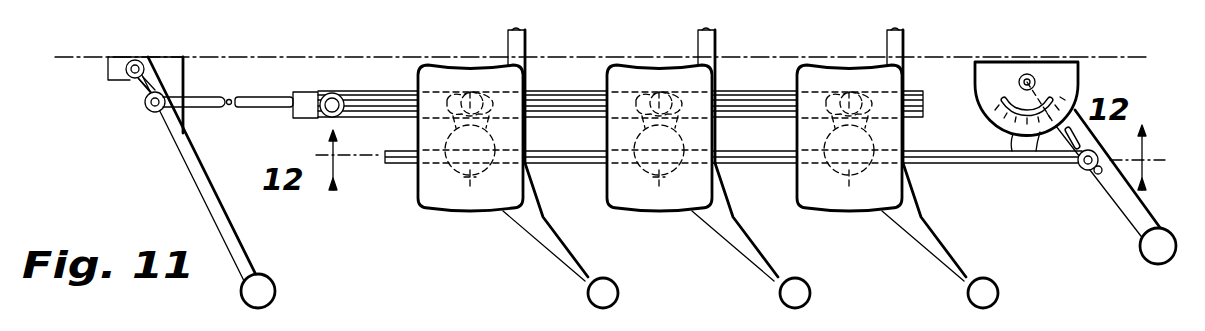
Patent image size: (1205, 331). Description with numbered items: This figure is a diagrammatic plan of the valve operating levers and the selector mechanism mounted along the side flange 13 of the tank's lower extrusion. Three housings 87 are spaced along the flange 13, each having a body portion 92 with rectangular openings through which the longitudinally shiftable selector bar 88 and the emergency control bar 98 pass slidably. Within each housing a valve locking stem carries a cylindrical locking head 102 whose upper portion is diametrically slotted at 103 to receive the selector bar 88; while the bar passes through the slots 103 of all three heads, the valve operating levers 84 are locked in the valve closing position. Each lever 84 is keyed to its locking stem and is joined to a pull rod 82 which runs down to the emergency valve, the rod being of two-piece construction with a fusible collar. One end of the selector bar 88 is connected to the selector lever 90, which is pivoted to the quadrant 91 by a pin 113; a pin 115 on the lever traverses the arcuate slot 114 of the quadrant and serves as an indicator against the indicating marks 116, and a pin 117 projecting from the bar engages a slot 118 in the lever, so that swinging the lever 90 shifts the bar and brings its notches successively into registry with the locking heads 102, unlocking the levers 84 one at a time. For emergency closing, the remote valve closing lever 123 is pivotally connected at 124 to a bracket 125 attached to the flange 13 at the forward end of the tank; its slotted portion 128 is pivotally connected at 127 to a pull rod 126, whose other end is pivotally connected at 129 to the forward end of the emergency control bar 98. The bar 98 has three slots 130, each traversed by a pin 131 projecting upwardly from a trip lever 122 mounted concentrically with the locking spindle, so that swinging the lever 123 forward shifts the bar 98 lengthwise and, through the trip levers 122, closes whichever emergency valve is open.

The flange 13 is at (80, 55).
The pull rod 82 is at (522, 43).
The valve operating lever 84 is at (583, 272).
The housing 87 is at (455, 211).
The selector bar 88 is at (771, 160).
The selector lever 90 is at (1138, 218).
The quadrant 91 is at (1058, 78).
The body portion 92 is at (428, 181).
The emergency control bar 98 is at (386, 102).
The locking head 102 is at (472, 179).
The slot 103 is at (660, 173).
The pin 113 is at (1022, 74).
The arcuate slot 114 is at (1000, 112).
The pin 115 is at (1076, 96).
The indicating marks 116 is at (1015, 152).
The pin 117 is at (1098, 176).
The slot 118 is at (1077, 161).
The trip lever 122 is at (448, 131).
The remote valve closing lever 123 is at (210, 200).
The pivotal connection 124 is at (131, 77).
The bracket 125 is at (108, 64).
The pull rod 126 is at (258, 101).
The pivotal connection 127 is at (161, 96).
The slotted portion 128 is at (150, 97).
The pivotal connection 129 is at (333, 93).
The slot 130 is at (488, 108).
The pin 131 is at (450, 100).